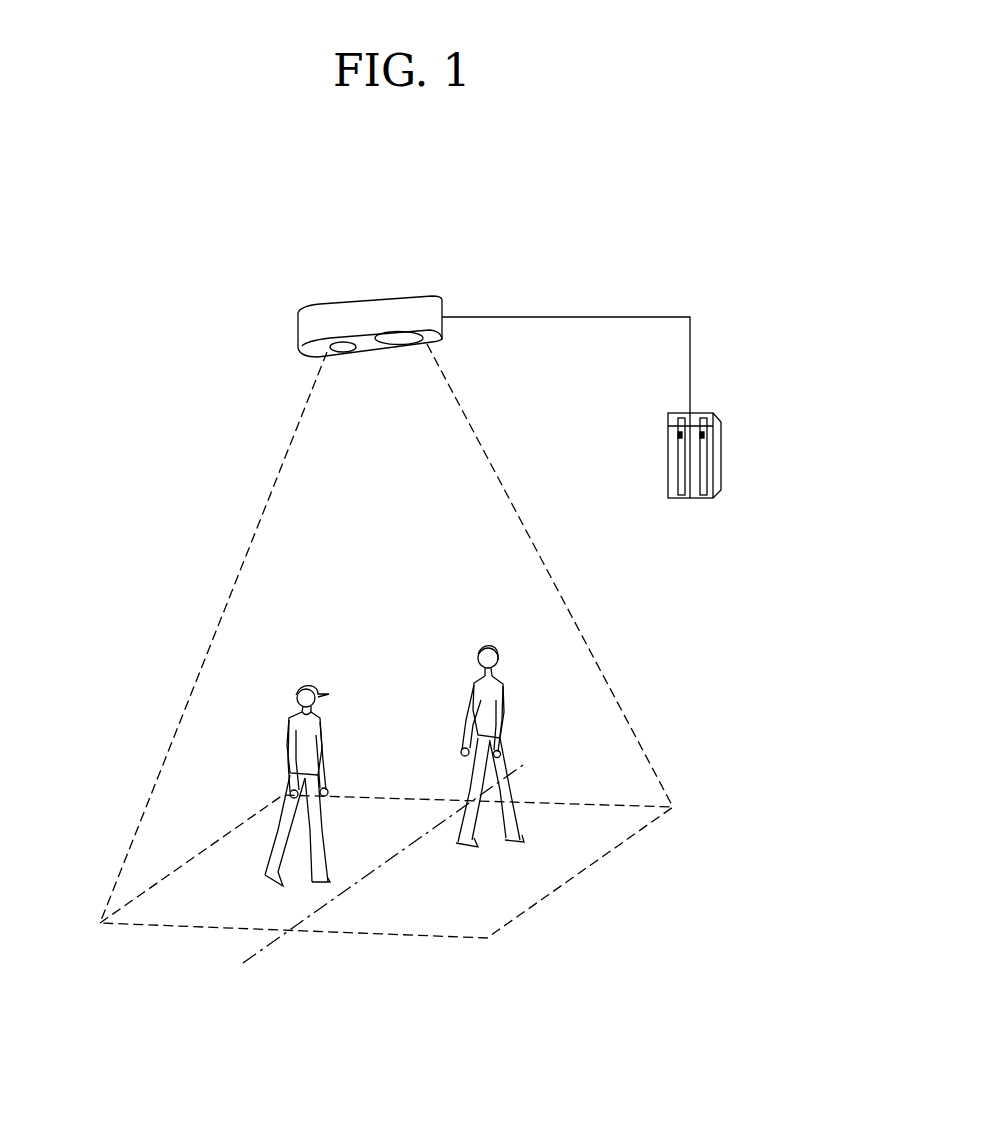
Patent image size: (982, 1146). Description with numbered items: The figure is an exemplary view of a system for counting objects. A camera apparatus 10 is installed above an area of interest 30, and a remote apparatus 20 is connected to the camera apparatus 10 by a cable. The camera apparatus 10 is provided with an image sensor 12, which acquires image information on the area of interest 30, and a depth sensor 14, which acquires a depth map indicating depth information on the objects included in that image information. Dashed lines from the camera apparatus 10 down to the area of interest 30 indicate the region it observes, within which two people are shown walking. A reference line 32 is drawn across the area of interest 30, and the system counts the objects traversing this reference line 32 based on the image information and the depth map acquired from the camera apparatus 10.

The camera apparatus 10 is at (304, 291).
The image sensor 12 is at (340, 353).
The depth sensor 14 is at (405, 345).
The remote apparatus 20 is at (725, 407).
The area of interest 30 is at (402, 938).
The reference line 32 is at (263, 950).